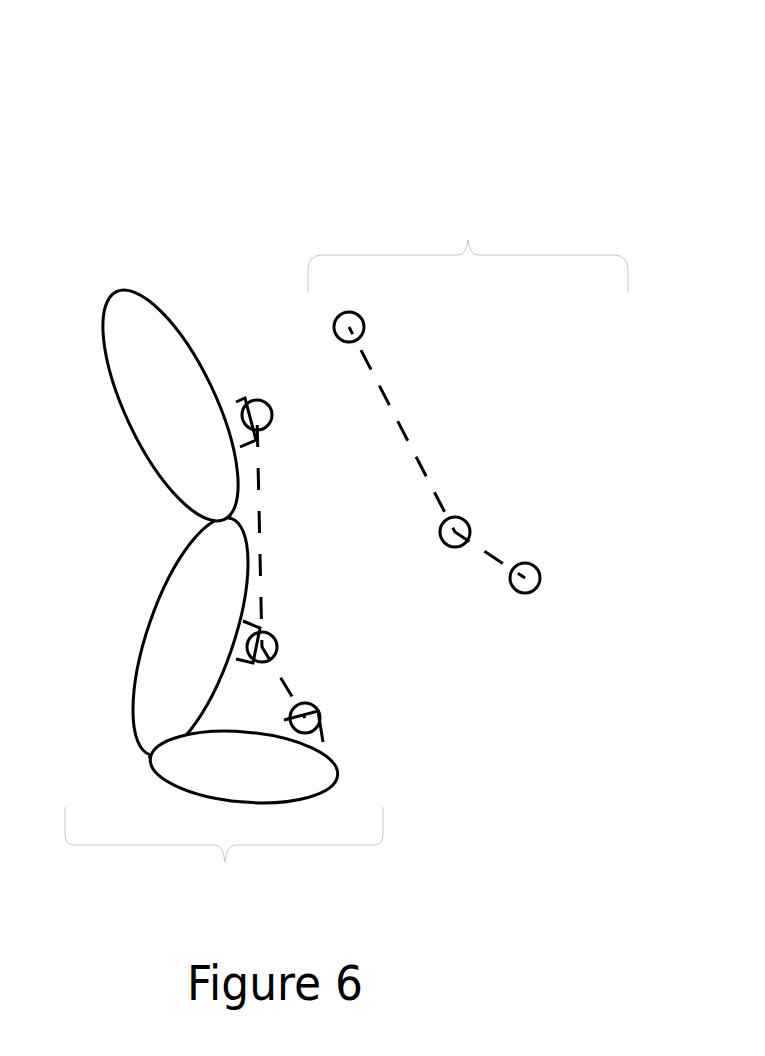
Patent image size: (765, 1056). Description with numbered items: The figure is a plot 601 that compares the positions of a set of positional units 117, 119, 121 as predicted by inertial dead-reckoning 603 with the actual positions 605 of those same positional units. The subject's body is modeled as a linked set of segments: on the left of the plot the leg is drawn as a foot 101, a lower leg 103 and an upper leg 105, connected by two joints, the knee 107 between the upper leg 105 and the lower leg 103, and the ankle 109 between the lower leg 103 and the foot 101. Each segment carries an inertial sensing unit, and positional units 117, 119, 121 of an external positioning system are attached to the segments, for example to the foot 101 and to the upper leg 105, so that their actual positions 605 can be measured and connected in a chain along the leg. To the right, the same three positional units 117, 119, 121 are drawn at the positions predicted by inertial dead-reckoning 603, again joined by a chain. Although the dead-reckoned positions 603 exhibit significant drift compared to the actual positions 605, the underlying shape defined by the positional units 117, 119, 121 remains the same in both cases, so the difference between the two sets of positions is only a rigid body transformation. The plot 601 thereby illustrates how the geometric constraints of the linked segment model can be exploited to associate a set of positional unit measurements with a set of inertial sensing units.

The plot 601 is at (147, 60).
The positions predicted by inertial dead-reckoning 603 is at (468, 247).
The actual positions of the positional units 605 is at (495, 372).
The foot 101 is at (258, 776).
The lower leg 103 is at (217, 660).
The upper leg 105 is at (198, 416).
The knee 107 is at (206, 516).
The ankle 109 is at (129, 754).
The positional unit 117 is at (320, 722).
The positional unit 119 is at (266, 437).
The positional unit 121 is at (278, 644).